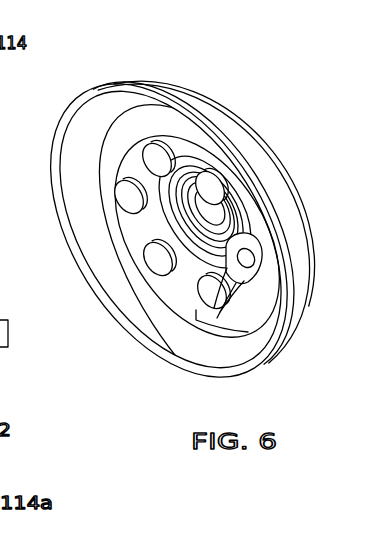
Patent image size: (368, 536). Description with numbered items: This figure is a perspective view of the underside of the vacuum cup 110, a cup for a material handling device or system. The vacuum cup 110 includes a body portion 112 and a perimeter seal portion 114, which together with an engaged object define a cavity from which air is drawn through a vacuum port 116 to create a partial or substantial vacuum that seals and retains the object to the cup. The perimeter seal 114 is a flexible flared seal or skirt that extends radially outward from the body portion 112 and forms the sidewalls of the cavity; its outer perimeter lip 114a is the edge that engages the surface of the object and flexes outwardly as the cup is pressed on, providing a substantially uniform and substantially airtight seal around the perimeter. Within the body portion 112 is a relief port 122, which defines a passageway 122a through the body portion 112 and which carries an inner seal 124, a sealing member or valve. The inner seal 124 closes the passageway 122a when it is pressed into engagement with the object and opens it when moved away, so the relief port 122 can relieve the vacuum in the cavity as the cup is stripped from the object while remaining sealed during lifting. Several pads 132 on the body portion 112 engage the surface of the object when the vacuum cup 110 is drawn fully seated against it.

The vacuum cup 110 is at (184, 259).
The body portion 112 is at (275, 147).
The perimeter seal portion 114 is at (167, 336).
The outer perimeter lip 114a is at (71, 241).
The vacuum port 116 is at (198, 214).
The relief port 122 is at (269, 286).
The passageway 122a is at (245, 286).
The inner seal 124 is at (232, 256).
The pads 132 is at (148, 158).